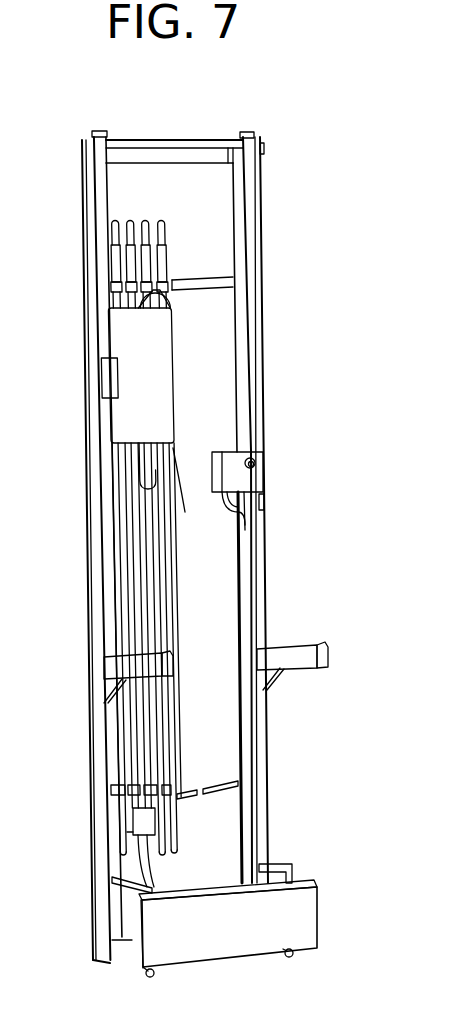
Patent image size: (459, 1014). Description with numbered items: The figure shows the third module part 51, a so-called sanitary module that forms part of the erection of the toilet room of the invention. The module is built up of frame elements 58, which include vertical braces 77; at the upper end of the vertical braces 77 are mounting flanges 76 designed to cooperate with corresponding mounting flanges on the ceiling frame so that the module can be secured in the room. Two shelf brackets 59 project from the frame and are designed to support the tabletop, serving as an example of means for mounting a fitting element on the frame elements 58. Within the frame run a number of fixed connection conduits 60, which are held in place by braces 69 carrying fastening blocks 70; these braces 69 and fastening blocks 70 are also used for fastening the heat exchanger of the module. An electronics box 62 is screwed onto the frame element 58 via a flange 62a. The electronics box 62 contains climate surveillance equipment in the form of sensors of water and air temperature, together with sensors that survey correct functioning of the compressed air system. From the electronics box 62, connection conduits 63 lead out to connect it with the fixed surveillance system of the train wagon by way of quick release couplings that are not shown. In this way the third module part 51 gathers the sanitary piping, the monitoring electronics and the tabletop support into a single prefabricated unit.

The third module part 51 is at (193, 128).
The mounting flanges 76 is at (97, 125).
The fixed connection conduits 60 is at (140, 268).
The vertical braces 77 is at (257, 300).
The frame elements 58 is at (84, 440).
The electronics box 62 is at (254, 478).
The flange 62a is at (264, 505).
The connection conduits 63 is at (245, 514).
The shelf brackets 59 is at (120, 666).
The braces 69 is at (222, 785).
The fastening blocks 70 is at (177, 796).